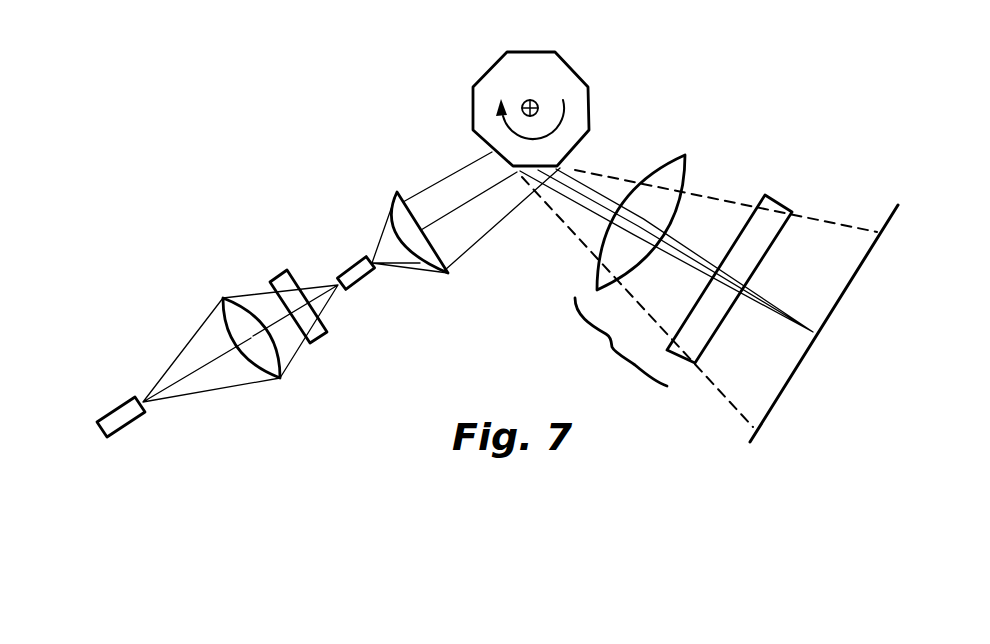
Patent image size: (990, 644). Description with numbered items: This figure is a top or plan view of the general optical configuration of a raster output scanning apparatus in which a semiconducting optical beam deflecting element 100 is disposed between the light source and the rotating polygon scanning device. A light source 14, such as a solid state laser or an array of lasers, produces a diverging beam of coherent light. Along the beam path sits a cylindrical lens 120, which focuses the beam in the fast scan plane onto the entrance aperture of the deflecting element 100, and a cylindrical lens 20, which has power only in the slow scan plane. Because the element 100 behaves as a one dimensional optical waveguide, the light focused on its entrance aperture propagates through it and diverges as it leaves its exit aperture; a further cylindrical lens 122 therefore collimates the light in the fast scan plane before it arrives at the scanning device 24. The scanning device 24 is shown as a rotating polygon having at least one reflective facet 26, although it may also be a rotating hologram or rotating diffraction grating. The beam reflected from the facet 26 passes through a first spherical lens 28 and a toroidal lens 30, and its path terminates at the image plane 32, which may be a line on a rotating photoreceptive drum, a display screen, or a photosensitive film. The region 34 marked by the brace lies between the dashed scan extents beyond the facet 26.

The light source 14 is at (120, 410).
The cylindrical lens 120 is at (226, 298).
The cylindrical lens 20 is at (281, 279).
The semiconducting optical beam deflecting element 100 is at (357, 262).
The cylindrical lens 122 is at (397, 192).
The scanning device 24 is at (560, 77).
The reflective facet 26 is at (580, 173).
The first spherical lens 28 is at (685, 155).
The toroidal lens 30 is at (773, 200).
The image plane 32 is at (868, 255).
The scan region 34 is at (699, 298).